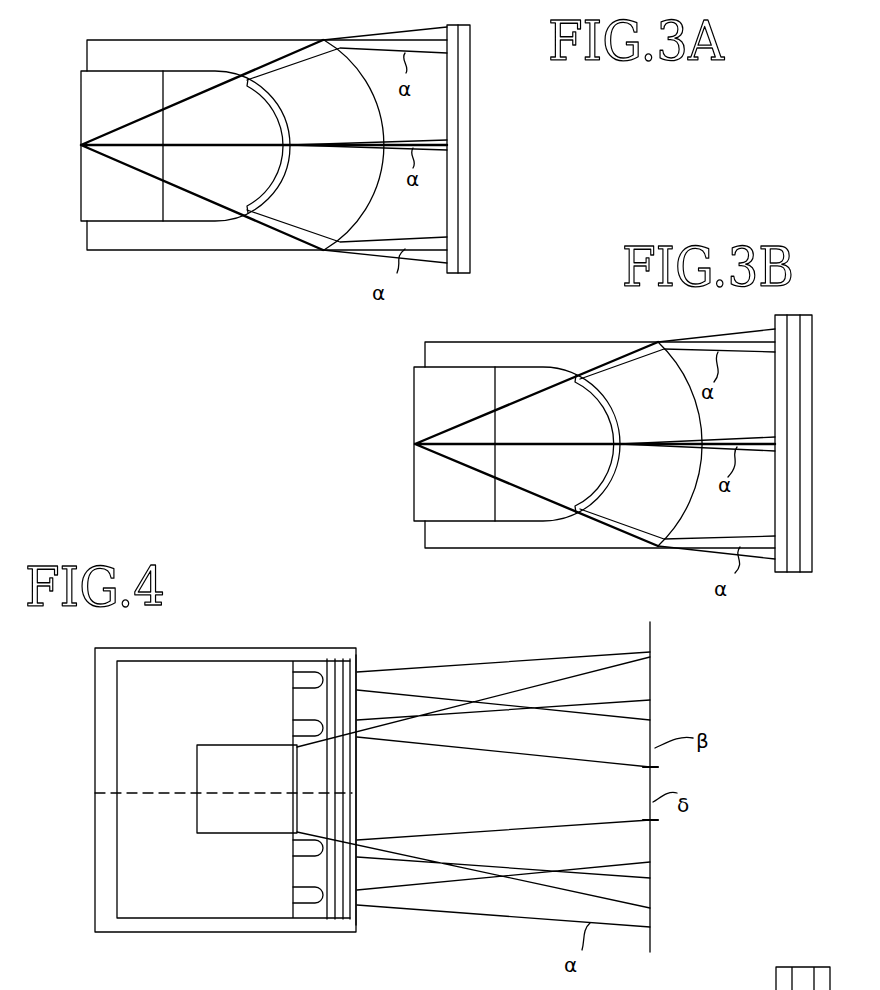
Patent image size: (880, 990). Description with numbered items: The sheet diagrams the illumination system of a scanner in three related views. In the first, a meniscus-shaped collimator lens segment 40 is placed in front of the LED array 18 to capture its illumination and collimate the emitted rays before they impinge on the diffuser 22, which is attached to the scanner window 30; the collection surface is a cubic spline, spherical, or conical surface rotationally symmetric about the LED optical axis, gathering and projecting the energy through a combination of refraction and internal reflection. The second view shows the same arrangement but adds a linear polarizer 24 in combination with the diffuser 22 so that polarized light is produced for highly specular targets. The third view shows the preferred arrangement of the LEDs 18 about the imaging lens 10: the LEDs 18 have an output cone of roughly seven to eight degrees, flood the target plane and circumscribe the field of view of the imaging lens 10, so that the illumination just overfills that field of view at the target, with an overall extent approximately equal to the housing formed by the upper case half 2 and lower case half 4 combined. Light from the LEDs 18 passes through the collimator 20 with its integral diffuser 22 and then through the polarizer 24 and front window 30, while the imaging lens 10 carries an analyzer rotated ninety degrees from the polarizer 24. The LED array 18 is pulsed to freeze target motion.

In FIG. 4, the upper case half 2 is at (95, 723).
In FIG. 4, the lower case half 4 is at (95, 887).
In FIG. 4, the imaging lens 10 is at (232, 827).
In FIG. 3A, the LED array 18 is at (87, 204).
In FIG. 3B, the LED array 18 is at (422, 488).
In FIG. 4, the LED array 18 is at (305, 903).
In FIG. 4, the collimator 20 is at (330, 918).
In FIG. 3A, the diffuser 22 is at (452, 268).
In FIG. 3B, the diffuser 22 is at (793, 578).
In FIG. 4, the diffuser 22 is at (343, 918).
In FIG. 3B, the linear polarizer 24 is at (777, 573).
In FIG. 4, the linear polarizer 24 is at (346, 661).
In FIG. 3A, the scanner window 30 is at (467, 260).
In FIG. 3B, the scanner window 30 is at (812, 574).
In FIG. 4, the scanner window 30 is at (355, 912).
In FIG. 3A, the meniscus-shaped collimator lens segment 40 is at (265, 240).
In FIG. 3B, the meniscus-shaped collimator lens segment 40 is at (602, 537).